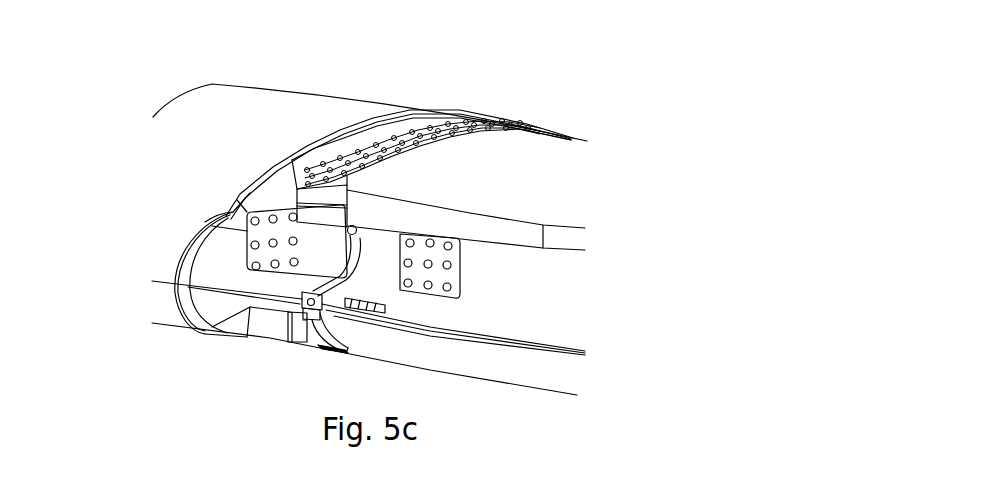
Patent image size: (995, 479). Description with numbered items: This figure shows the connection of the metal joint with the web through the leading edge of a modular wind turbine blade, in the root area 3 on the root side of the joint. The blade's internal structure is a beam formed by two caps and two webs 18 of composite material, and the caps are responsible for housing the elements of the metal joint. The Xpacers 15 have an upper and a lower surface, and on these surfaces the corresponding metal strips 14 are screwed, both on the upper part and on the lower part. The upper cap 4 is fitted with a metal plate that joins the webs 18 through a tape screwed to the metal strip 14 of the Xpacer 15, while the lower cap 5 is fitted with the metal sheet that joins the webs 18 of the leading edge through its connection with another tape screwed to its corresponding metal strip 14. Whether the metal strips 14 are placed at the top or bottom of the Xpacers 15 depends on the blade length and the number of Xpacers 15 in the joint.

The root area 3 is at (184, 130).
The upper cap 4 is at (500, 226).
The lower cap 5 is at (299, 331).
The metal strip 14 is at (365, 306).
The Xpacer 15 is at (387, 140).
The webs 18 is at (321, 244).